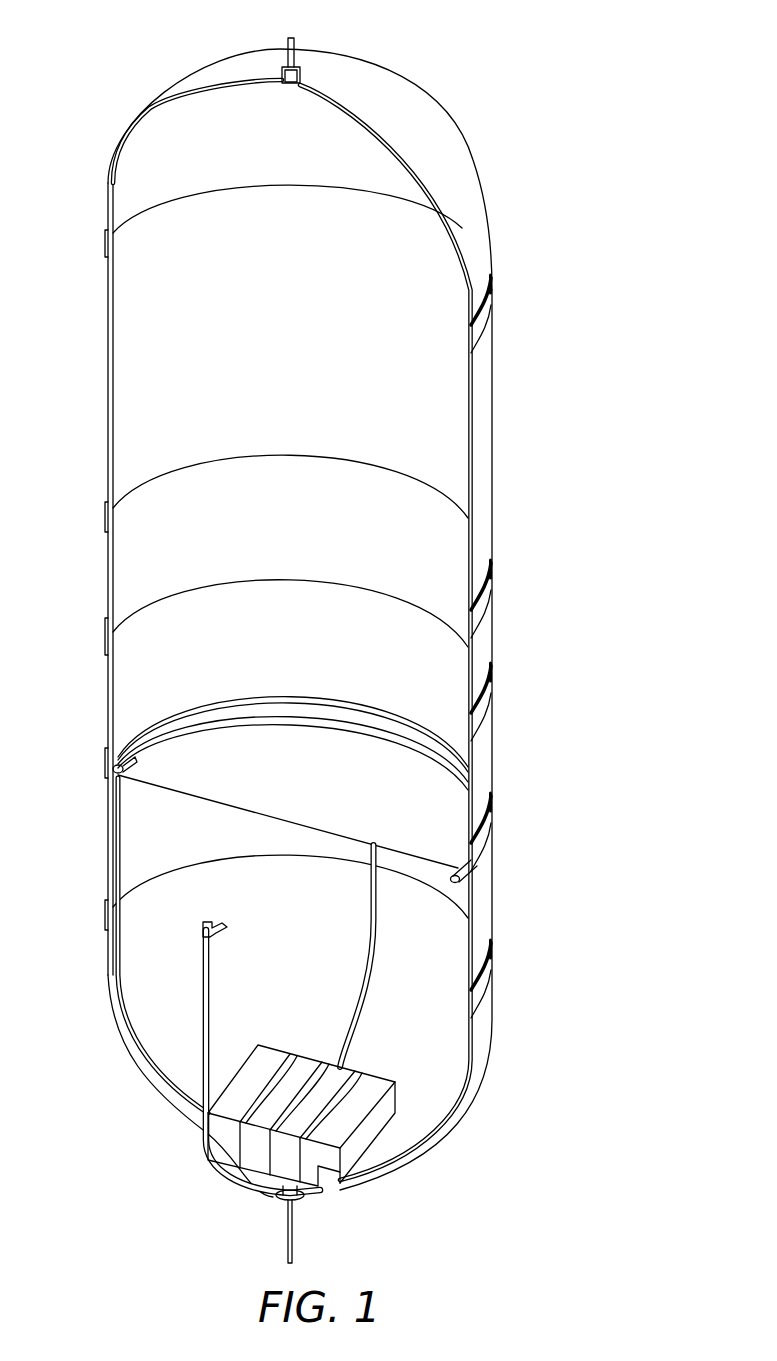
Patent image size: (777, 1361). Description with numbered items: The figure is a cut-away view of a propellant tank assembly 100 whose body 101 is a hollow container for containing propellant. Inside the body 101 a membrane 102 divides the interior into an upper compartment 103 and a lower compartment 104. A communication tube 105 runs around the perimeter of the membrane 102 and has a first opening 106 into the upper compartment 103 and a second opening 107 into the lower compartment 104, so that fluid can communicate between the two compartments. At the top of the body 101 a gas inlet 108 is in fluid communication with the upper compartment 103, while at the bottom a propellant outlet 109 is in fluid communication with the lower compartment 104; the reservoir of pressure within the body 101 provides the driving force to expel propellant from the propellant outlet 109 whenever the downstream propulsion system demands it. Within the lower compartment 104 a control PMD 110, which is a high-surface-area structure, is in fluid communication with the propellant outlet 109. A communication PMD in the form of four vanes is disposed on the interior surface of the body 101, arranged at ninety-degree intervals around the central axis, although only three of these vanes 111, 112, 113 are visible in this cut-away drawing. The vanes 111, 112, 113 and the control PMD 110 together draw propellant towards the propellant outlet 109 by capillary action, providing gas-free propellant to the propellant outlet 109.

The propellant tank assembly 100 is at (512, 459).
The body 101 is at (415, 91).
The membrane 102 is at (437, 810).
The upper compartment 103 is at (181, 318).
The lower compartment 104 is at (183, 845).
The communication tube 105 is at (165, 745).
The first opening 106 is at (112, 772).
The second opening 107 is at (470, 878).
The gas inlet 108 is at (287, 47).
The propellant outlet 109 is at (298, 1237).
The control PMD 110 is at (367, 1133).
The vane 111 is at (232, 1188).
The vane 112 is at (122, 1017).
The vane 113 is at (368, 946).